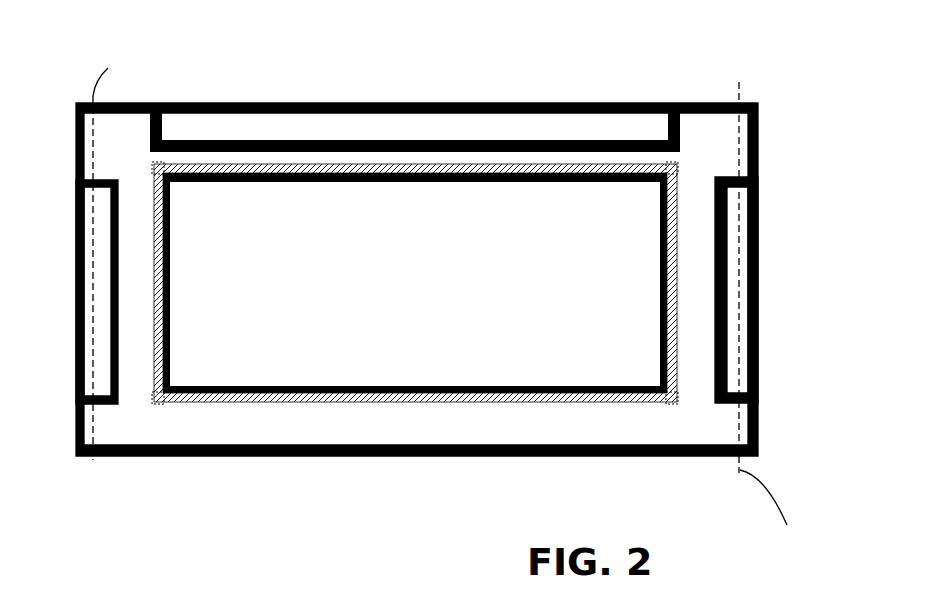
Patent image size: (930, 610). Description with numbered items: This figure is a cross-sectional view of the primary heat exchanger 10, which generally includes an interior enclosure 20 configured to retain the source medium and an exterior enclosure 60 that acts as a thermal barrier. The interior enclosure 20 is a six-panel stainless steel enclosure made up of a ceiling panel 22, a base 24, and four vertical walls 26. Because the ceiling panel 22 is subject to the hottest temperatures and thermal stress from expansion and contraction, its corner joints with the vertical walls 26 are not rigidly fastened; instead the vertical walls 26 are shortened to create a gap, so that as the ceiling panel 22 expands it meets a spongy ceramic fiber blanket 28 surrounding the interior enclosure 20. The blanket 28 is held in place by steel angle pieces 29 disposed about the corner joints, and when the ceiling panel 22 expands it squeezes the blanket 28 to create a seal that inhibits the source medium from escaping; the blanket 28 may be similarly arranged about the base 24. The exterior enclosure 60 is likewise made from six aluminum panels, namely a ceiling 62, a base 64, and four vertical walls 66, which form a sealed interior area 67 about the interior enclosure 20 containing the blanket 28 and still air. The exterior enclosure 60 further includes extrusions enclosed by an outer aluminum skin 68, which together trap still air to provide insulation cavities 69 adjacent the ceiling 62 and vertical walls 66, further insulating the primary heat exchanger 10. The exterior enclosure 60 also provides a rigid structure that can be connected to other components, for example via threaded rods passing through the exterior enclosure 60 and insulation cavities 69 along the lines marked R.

The primary heat exchanger 10 is at (622, 52).
The interior enclosure 20 is at (197, 183).
The ceiling panel 22 is at (432, 181).
The base 24 is at (373, 387).
The vertical walls 26 is at (170, 313).
The ceramic fiber blanket 28 is at (677, 247).
The steel angle pieces 29 is at (152, 170).
The exterior enclosure 60 is at (112, 456).
The ceiling 62 is at (583, 140).
The base 64 is at (695, 457).
The vertical walls 66 is at (727, 350).
The sealed interior area 67 is at (697, 295).
The outer aluminum skin 68 is at (203, 103).
The insulation cavities 69 is at (513, 127).